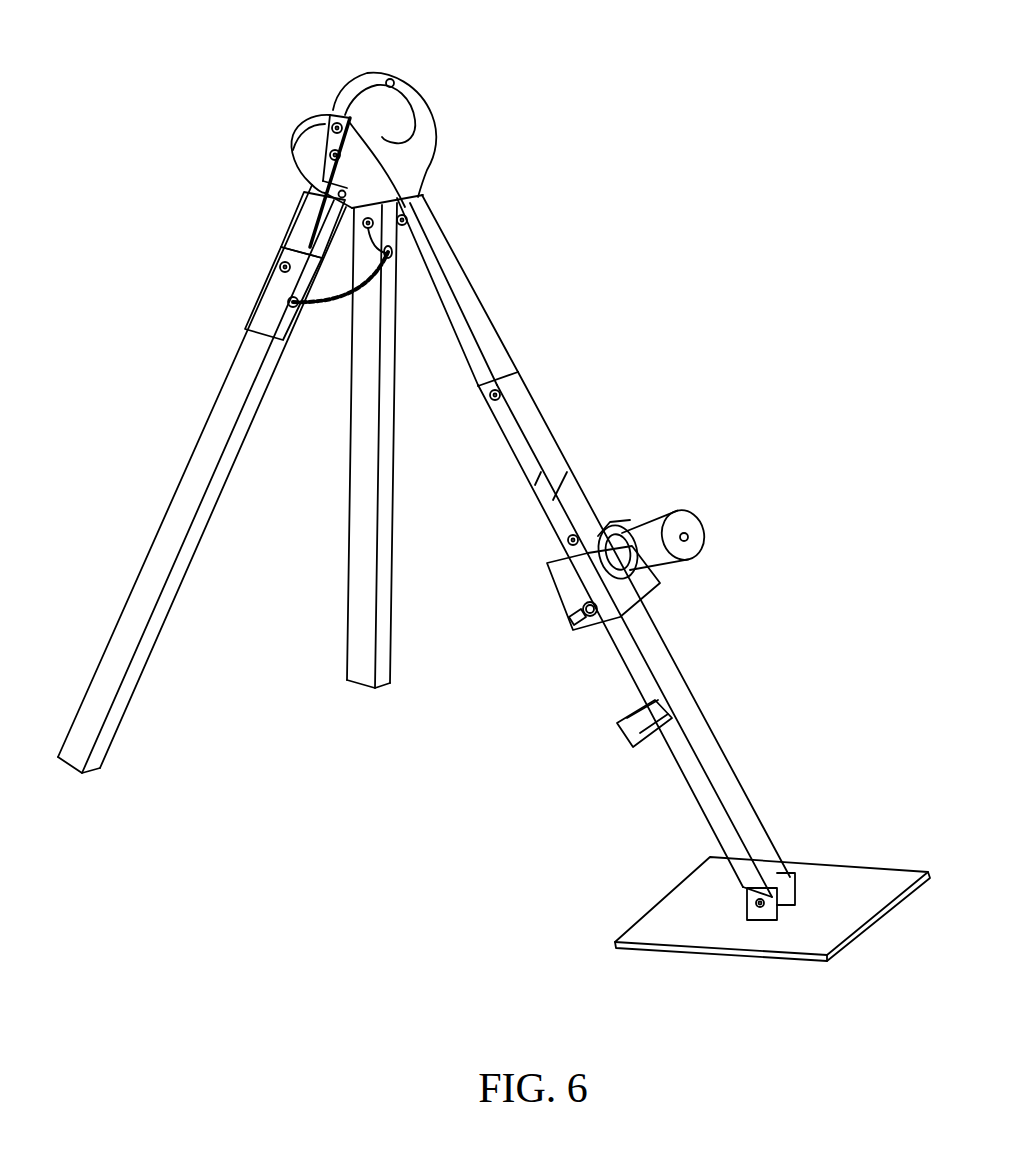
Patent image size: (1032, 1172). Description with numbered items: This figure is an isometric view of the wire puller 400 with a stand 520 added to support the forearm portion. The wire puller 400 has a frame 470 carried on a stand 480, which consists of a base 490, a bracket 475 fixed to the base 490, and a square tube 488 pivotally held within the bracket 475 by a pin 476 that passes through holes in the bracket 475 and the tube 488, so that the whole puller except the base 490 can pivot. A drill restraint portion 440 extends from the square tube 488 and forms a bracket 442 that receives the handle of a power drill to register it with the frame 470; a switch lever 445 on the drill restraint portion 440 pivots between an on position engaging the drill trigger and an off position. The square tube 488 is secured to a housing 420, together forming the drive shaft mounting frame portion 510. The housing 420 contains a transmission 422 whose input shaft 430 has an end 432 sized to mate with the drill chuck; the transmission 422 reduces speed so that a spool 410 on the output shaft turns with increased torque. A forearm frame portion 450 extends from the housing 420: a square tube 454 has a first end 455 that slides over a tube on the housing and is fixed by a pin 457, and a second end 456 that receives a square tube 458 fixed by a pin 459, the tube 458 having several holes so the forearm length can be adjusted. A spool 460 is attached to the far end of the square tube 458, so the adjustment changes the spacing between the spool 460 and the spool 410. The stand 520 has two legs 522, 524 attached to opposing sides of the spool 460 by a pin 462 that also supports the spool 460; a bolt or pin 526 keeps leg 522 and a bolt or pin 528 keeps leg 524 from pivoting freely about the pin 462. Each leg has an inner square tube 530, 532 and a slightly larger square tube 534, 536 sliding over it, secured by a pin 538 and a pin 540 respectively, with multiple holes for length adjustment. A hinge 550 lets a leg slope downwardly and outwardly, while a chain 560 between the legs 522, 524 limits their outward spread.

The wire puller 400 is at (782, 135).
The spool 410 is at (668, 505).
The housing 420 is at (628, 523).
The transmission 422 is at (540, 605).
The input shaft 430 is at (582, 622).
The end of input shaft 432 is at (574, 620).
The drill restraint portion 440 is at (652, 695).
The bracket 442 is at (615, 722).
The switch lever 445 is at (660, 734).
The forearm frame portion 450 is at (537, 408).
The square tube 454 is at (535, 485).
The first end 455 is at (567, 472).
The second end 456 is at (433, 243).
The pin 457 is at (567, 540).
The square tube 458 is at (462, 267).
The pin 459 is at (495, 402).
The spool 460 is at (340, 100).
The pin 462 is at (293, 150).
The frame 470 is at (632, 360).
The bracket 475 is at (795, 880).
The pin 476 is at (748, 903).
The stand 480 is at (795, 755).
The square tube 488 is at (755, 822).
The base 490 is at (887, 866).
The drive shaft mounting frame portion 510 is at (643, 612).
The stand 520 is at (135, 363).
The leg 522 is at (132, 700).
The leg 524 is at (348, 600).
The bolt or pin 526 is at (323, 108).
The bolt or pin 528 is at (395, 82).
The square tube 530 is at (287, 237).
The square tube 532 is at (333, 295).
The square tube 534 is at (197, 440).
The square tube 536 is at (348, 520).
The pin 538 is at (283, 268).
The pin 540 is at (398, 262).
The hinge 550 is at (294, 128).
The chain 560 is at (276, 343).